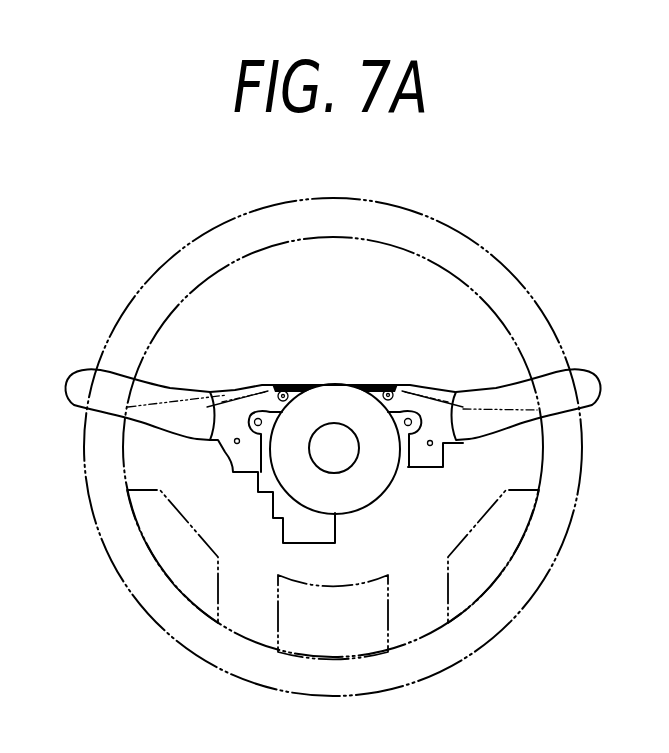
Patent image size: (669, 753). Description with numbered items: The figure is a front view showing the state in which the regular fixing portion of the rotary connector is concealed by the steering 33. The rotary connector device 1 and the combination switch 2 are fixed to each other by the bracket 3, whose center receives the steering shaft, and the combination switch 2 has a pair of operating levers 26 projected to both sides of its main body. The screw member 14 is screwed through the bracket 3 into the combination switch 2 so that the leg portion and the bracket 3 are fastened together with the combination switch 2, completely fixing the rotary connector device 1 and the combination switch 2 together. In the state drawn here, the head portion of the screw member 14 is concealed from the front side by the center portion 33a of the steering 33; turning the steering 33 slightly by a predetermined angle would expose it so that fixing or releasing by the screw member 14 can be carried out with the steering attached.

The steering 33 is at (500, 265).
The center portion of steering 33a is at (347, 407).
The rotary connector device 1 is at (437, 393).
The combination switch 2 is at (243, 388).
The operating lever 26 is at (585, 380).
The male screw member 14 is at (270, 388).
The bracket 3 is at (445, 467).